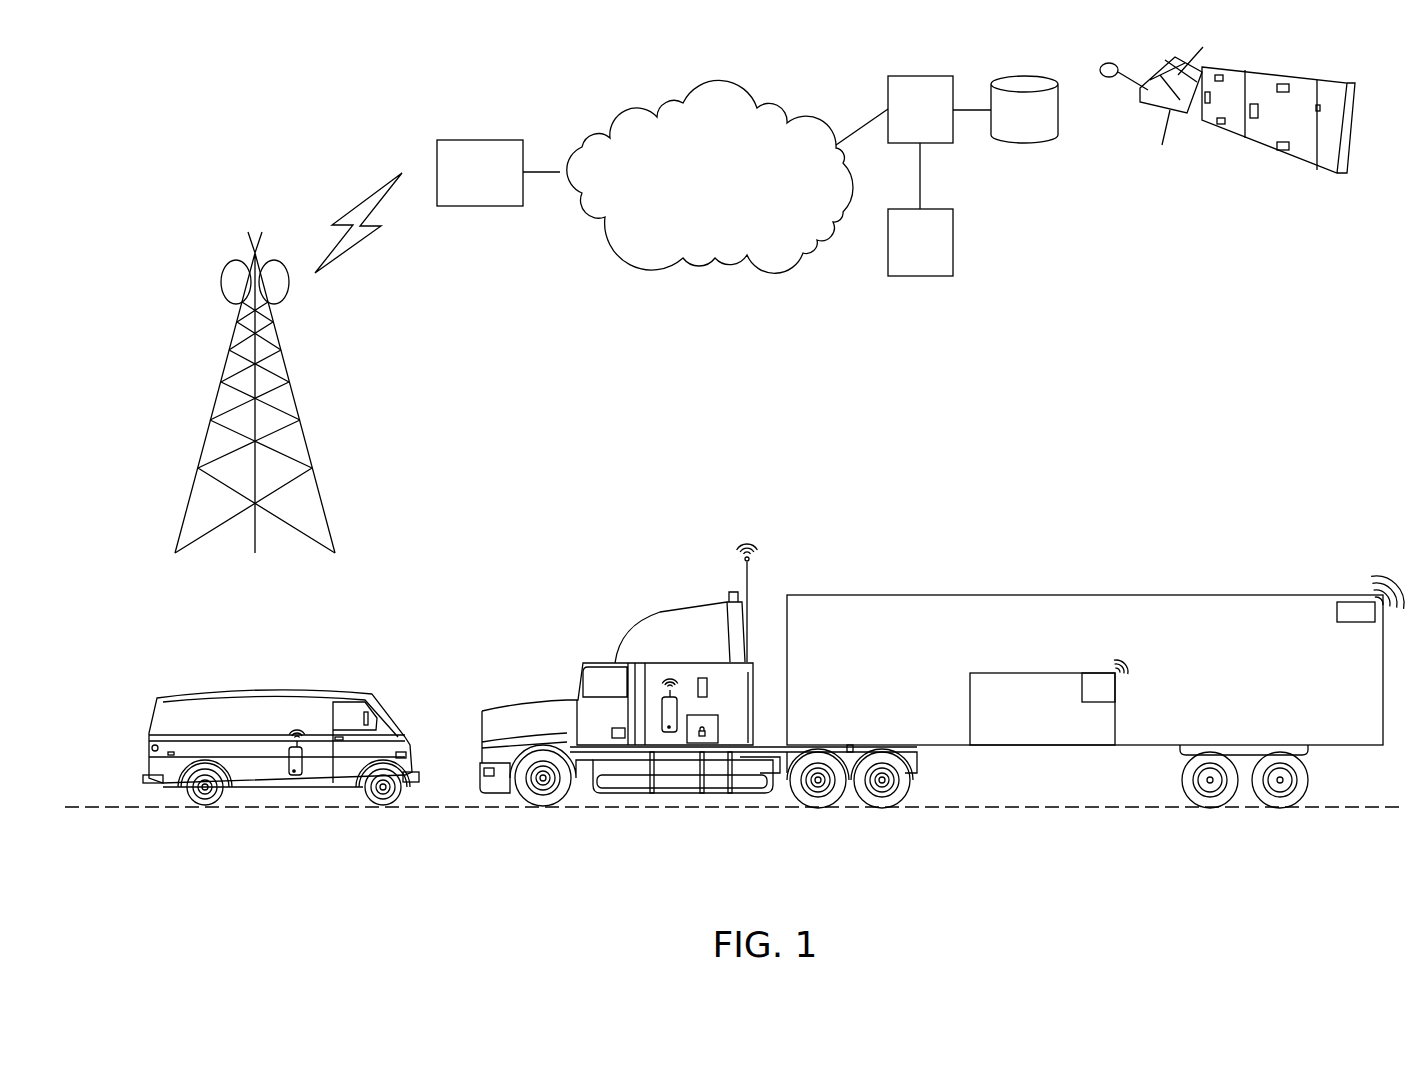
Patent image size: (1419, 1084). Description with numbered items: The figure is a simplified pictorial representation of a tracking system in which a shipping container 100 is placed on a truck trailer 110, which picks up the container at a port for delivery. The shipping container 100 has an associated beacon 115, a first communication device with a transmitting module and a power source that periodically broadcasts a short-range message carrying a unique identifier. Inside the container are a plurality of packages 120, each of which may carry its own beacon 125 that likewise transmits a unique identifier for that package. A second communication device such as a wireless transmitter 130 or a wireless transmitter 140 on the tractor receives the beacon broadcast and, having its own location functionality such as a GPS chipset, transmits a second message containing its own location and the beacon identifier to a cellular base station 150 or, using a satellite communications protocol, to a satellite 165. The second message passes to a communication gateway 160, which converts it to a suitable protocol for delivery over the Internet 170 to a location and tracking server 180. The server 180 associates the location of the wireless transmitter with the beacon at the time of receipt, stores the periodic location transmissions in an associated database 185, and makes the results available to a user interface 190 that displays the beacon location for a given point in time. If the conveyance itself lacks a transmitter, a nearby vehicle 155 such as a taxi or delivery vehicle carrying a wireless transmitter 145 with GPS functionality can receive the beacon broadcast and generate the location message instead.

The shipping container 100 is at (1095, 671).
The truck trailer 110 is at (698, 689).
The beacon 115 is at (1348, 606).
The package 120 is at (1018, 742).
The beacon 125 is at (1095, 682).
The wireless transmitter 130 is at (672, 733).
The wireless transmitter 140 is at (750, 610).
The wireless transmitter 145 is at (297, 775).
The base station 150 is at (321, 504).
The vehicle 155 is at (281, 743).
The communication gateway 160 is at (480, 173).
The satellite 165 is at (1357, 83).
The Internet 170 is at (710, 176).
The location and tracking server 180 is at (920, 109).
The database 185 is at (1024, 109).
The user interface 190 is at (920, 242).